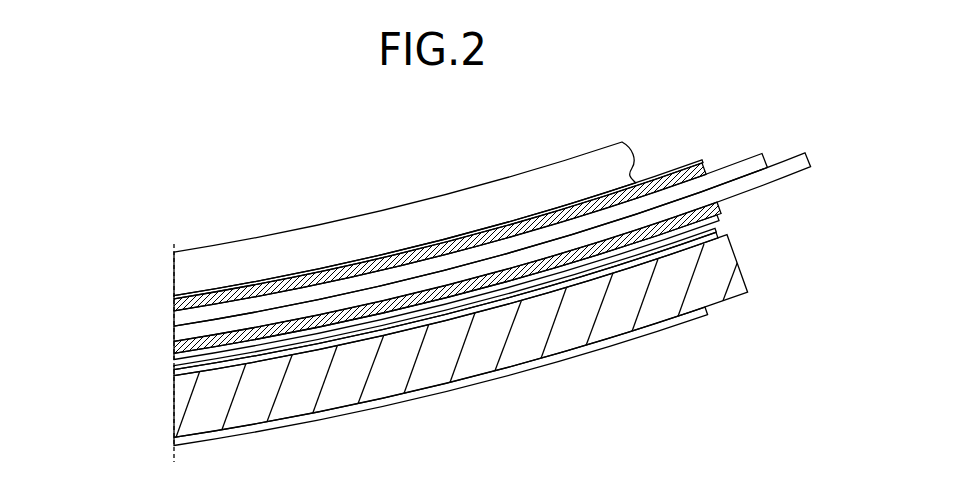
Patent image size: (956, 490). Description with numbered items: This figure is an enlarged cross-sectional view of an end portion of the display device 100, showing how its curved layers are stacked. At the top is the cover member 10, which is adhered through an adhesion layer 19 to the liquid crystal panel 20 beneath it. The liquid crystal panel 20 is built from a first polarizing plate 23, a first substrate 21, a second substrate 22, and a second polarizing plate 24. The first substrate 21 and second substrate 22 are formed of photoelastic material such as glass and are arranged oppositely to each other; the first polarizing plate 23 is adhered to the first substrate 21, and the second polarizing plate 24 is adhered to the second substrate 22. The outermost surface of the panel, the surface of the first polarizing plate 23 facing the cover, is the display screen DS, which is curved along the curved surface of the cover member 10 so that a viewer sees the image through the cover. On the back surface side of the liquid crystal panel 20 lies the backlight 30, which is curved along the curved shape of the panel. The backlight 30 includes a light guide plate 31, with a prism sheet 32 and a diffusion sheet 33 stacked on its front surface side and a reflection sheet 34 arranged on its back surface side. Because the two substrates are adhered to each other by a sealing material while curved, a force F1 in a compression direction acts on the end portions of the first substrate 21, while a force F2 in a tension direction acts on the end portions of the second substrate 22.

The display device 100 is at (441, 289).
The cover member 10 is at (181, 263).
The display screen DS is at (480, 236).
The adhesion layer 19 is at (173, 302).
The liquid crystal panel 20 is at (441, 260).
The first polarizing plate 23 is at (173, 307).
The first substrate 21 is at (173, 327).
The second substrate 22 is at (173, 341).
The second polarizing plate 24 is at (115, 283).
The backlight 30 is at (411, 345).
The diffusion sheet 33 is at (175, 368).
The prism sheet 32 is at (173, 381).
The light guide plate 31 is at (182, 417).
The reflection sheet 34 is at (115, 372).
The force in a compression direction F1 is at (752, 138).
The force in a tension direction F2 is at (771, 197).